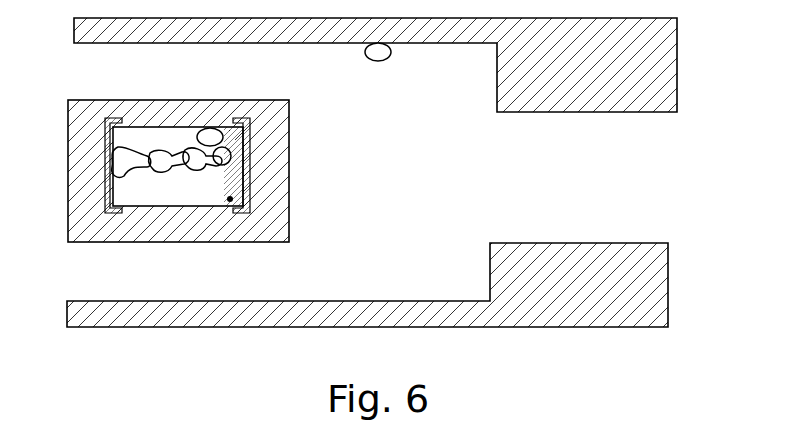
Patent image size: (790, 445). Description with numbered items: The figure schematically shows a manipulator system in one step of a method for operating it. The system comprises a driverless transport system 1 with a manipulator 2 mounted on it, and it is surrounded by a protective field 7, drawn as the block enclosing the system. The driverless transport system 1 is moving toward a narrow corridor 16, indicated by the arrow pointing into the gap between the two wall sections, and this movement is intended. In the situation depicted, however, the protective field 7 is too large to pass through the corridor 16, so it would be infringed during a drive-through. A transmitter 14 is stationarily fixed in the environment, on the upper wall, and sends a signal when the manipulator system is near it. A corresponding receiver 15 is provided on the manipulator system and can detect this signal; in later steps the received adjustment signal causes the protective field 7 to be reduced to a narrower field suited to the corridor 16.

The driverless transport system 1 is at (160, 188).
The manipulator 2 is at (160, 146).
The protective field 7 is at (289, 175).
The transmitter 14 is at (378, 62).
The receiver 15 is at (213, 138).
The corridor 16 is at (508, 187).